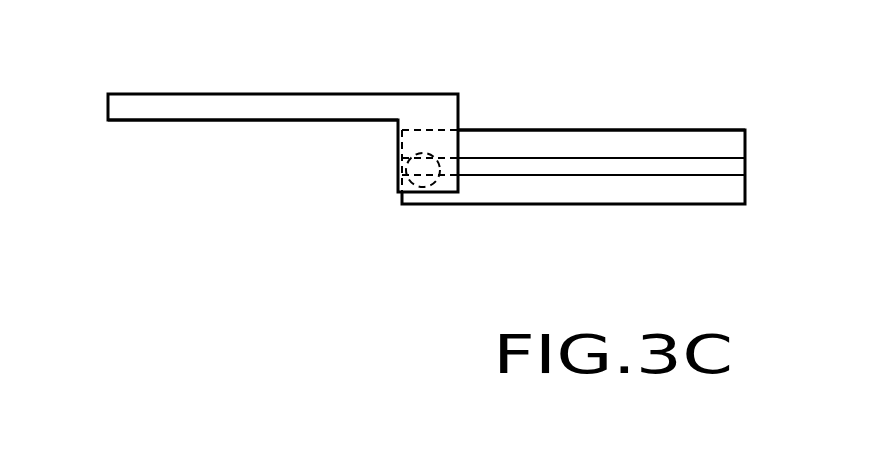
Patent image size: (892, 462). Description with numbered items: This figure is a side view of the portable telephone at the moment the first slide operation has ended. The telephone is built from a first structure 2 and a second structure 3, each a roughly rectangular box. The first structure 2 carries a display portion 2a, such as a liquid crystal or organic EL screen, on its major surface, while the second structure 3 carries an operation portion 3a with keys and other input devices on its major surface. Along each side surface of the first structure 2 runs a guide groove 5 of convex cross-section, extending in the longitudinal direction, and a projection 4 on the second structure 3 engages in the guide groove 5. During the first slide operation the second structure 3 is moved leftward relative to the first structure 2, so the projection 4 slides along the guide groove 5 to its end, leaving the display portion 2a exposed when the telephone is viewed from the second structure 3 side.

The second structure 3 is at (251, 93).
The operation portion 3a is at (226, 122).
The first structure 2 is at (531, 194).
The display portion 2a is at (598, 130).
The guide groove 5 is at (710, 168).
The projection 4 is at (428, 153).